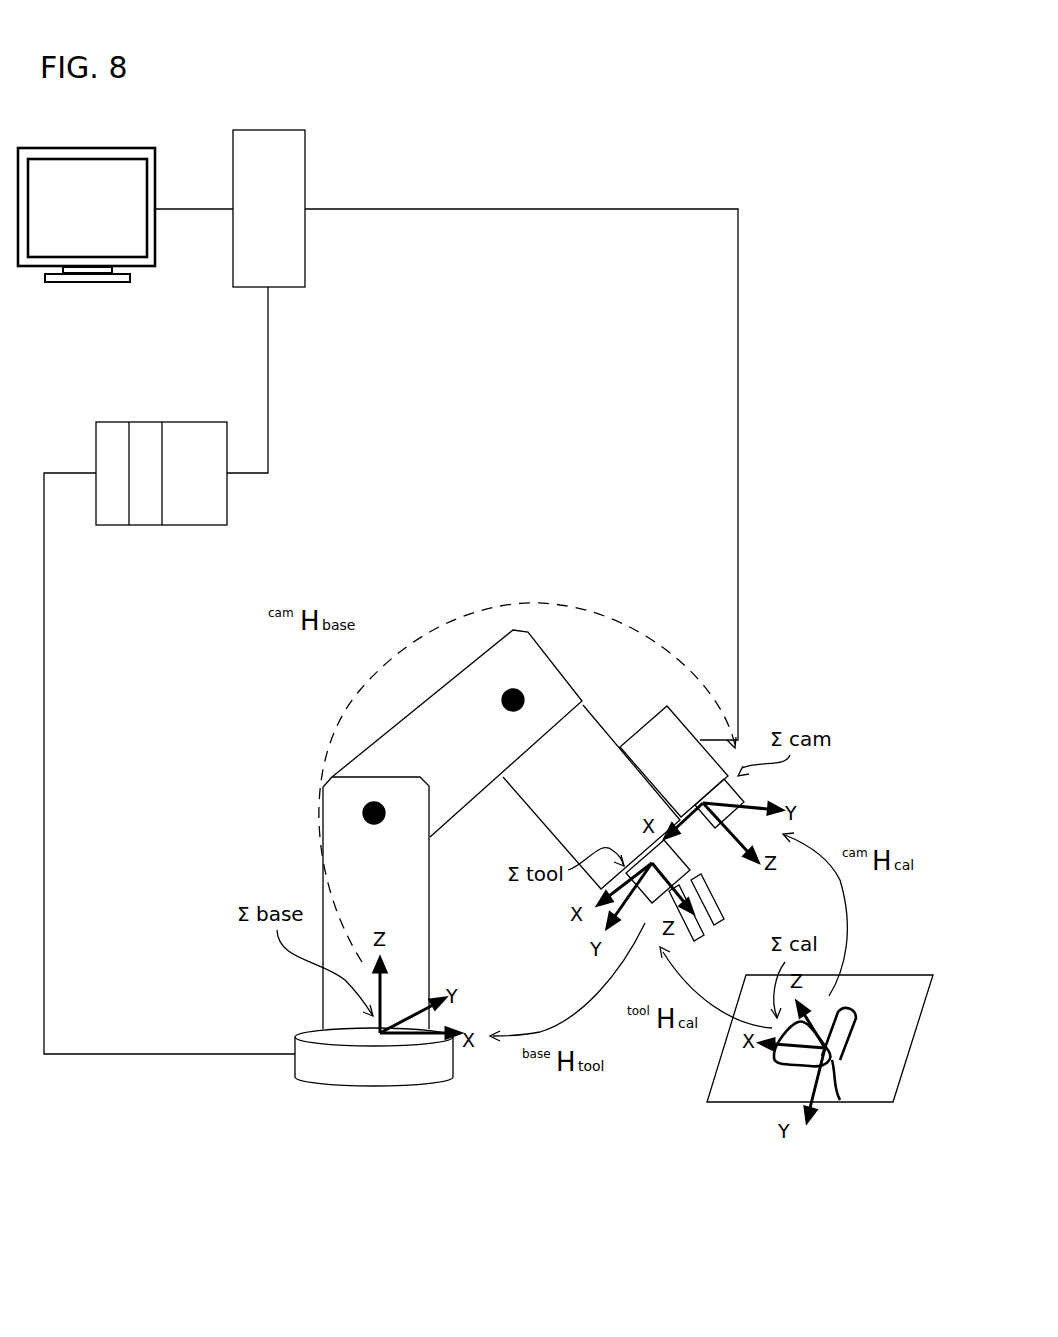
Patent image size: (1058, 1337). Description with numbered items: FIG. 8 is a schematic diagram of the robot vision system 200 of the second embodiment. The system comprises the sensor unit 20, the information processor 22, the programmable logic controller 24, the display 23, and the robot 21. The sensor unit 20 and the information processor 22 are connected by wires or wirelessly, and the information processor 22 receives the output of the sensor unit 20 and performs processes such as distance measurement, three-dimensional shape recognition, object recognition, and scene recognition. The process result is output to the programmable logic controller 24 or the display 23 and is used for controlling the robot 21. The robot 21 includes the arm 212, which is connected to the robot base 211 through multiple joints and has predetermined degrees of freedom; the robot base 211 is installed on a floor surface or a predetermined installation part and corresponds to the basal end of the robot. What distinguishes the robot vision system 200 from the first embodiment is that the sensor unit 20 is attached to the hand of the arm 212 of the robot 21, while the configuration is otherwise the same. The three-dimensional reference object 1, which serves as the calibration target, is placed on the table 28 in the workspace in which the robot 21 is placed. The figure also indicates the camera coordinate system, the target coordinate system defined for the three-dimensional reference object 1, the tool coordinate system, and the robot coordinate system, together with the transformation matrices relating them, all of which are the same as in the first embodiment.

The robot vision system 200 is at (527, 173).
The display 23 is at (93, 148).
The information processor 22 is at (268, 130).
The programmable logic controller 24 is at (147, 422).
The robot 21 is at (458, 858).
The arm 212 is at (605, 725).
The robot base 211 is at (308, 1027).
The sensor unit 20 is at (692, 724).
The table 28 is at (755, 1102).
The 3D reference object 1 is at (840, 1100).